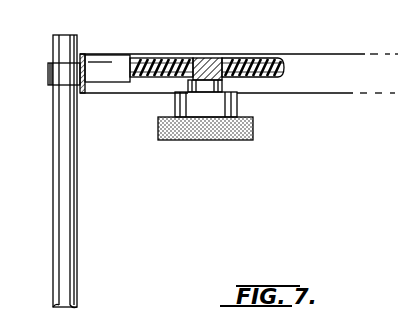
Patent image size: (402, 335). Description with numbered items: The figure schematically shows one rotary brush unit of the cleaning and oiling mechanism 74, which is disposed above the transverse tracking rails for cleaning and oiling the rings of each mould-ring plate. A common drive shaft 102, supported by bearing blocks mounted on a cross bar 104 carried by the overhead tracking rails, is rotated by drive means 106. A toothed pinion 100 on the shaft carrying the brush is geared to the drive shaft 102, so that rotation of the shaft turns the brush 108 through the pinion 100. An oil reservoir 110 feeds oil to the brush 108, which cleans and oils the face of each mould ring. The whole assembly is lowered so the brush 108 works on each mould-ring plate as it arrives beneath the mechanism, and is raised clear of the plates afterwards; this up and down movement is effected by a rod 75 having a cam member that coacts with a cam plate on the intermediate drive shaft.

The cleaning and oiling mechanism 74 is at (320, 46).
The rod 75 is at (62, 147).
The toothed pinion 100 is at (210, 60).
The common drive shaft 102 is at (157, 60).
The cross bar 104 is at (268, 34).
The drive means 106 is at (117, 60).
The brush 108 is at (158, 125).
The oil reservoir 110 is at (185, 102).